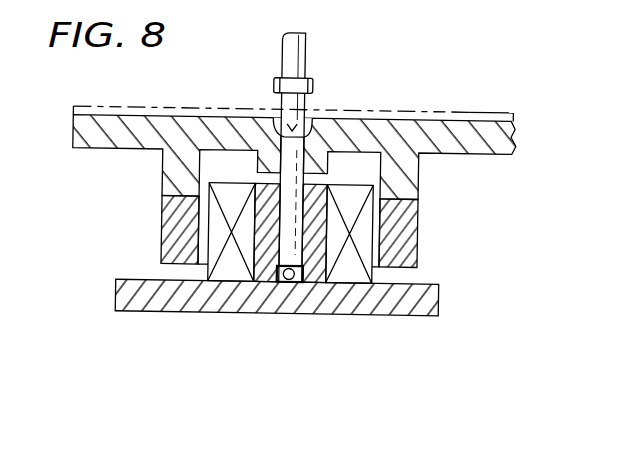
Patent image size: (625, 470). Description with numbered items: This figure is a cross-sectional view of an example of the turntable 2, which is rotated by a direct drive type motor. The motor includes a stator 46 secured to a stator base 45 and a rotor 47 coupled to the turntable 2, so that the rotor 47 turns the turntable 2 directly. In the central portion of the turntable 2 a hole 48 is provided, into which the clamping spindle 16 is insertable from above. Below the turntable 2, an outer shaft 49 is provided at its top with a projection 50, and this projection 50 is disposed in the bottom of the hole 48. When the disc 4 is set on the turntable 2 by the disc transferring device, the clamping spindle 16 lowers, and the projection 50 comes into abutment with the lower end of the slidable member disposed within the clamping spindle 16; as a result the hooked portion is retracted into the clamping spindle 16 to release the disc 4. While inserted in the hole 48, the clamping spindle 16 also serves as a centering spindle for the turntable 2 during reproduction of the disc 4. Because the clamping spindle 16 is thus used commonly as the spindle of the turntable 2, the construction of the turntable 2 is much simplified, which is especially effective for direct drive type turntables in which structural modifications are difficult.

The turntable 2 is at (478, 145).
The disc 4 is at (470, 109).
The clamping spindle 16 is at (298, 53).
The stator base 45 is at (433, 286).
The stator 46 is at (231, 274).
The rotor 47 is at (163, 225).
The hole 48 is at (307, 117).
The outer shaft 49 is at (303, 256).
The projection 50 is at (291, 124).